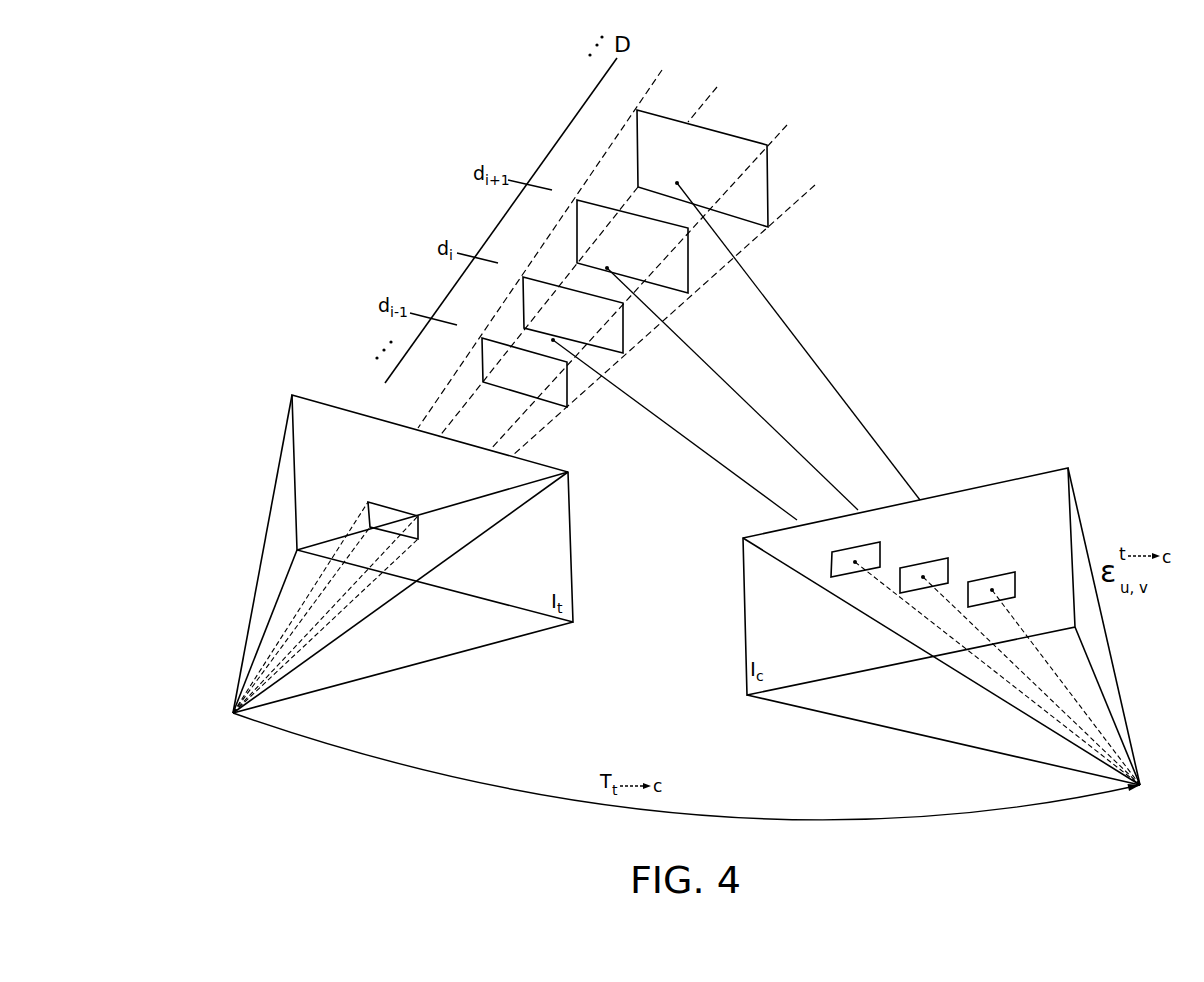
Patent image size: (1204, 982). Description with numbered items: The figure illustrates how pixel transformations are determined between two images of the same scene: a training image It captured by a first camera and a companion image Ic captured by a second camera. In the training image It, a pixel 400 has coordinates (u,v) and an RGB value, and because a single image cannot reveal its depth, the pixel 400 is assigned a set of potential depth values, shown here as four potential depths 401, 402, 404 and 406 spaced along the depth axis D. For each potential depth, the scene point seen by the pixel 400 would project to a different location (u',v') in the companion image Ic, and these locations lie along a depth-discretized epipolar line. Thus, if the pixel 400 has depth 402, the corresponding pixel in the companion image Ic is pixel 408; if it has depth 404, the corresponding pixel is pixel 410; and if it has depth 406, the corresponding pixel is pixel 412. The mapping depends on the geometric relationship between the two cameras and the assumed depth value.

The pixel 400 is at (381, 515).
The potential depth 401 is at (553, 390).
The potential depth 402 is at (608, 337).
The potential depth 404 is at (678, 277).
The potential depth 406 is at (758, 208).
The pixel 408 is at (830, 572).
The pixel 410 is at (946, 570).
The pixel 412 is at (1009, 575).